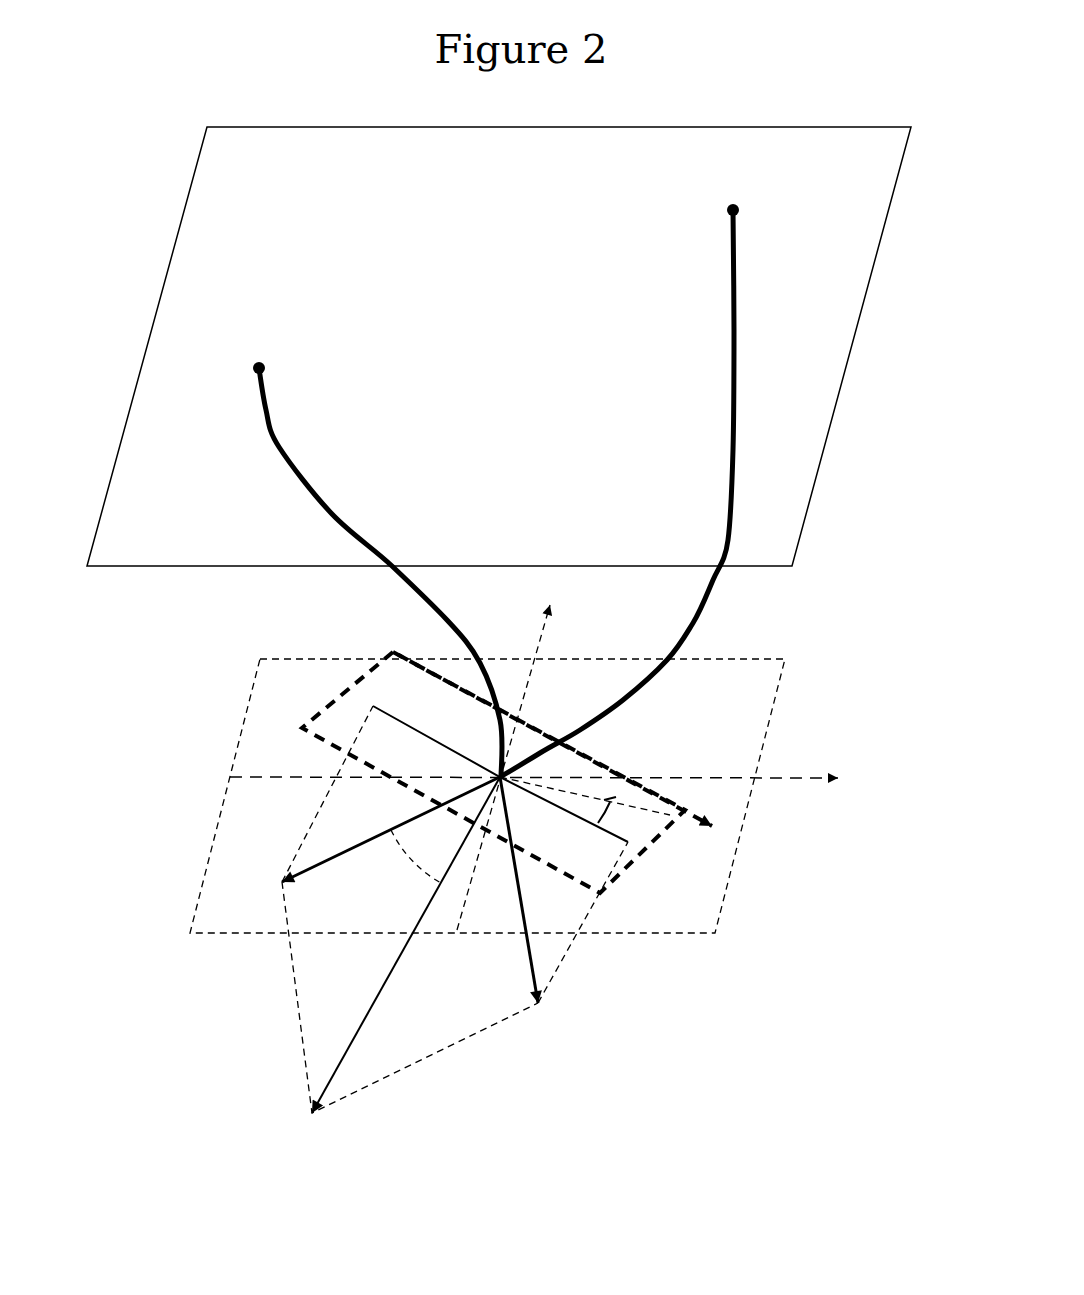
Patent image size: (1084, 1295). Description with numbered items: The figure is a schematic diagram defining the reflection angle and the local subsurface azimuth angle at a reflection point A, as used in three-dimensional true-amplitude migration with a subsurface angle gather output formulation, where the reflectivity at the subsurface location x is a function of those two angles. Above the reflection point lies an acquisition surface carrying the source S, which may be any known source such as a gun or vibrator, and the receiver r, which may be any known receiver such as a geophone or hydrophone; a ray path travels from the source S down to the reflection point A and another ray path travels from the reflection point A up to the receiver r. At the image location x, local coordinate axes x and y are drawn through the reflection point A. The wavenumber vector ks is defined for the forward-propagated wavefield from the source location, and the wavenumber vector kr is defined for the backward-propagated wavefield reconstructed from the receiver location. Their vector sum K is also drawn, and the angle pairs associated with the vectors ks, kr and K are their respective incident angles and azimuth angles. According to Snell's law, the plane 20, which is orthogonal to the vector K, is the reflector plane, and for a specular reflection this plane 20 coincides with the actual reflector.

The plane 20 is at (322, 716).
The source S is at (377, 562).
The receiver r is at (635, 479).
The reflection point A is at (521, 774).
The subsurface location x is at (538, 795).
The y axis y is at (519, 763).
The wavenumber vector kr is at (360, 821).
The wavenumber vector ks is at (591, 915).
The vector sum K is at (410, 968).